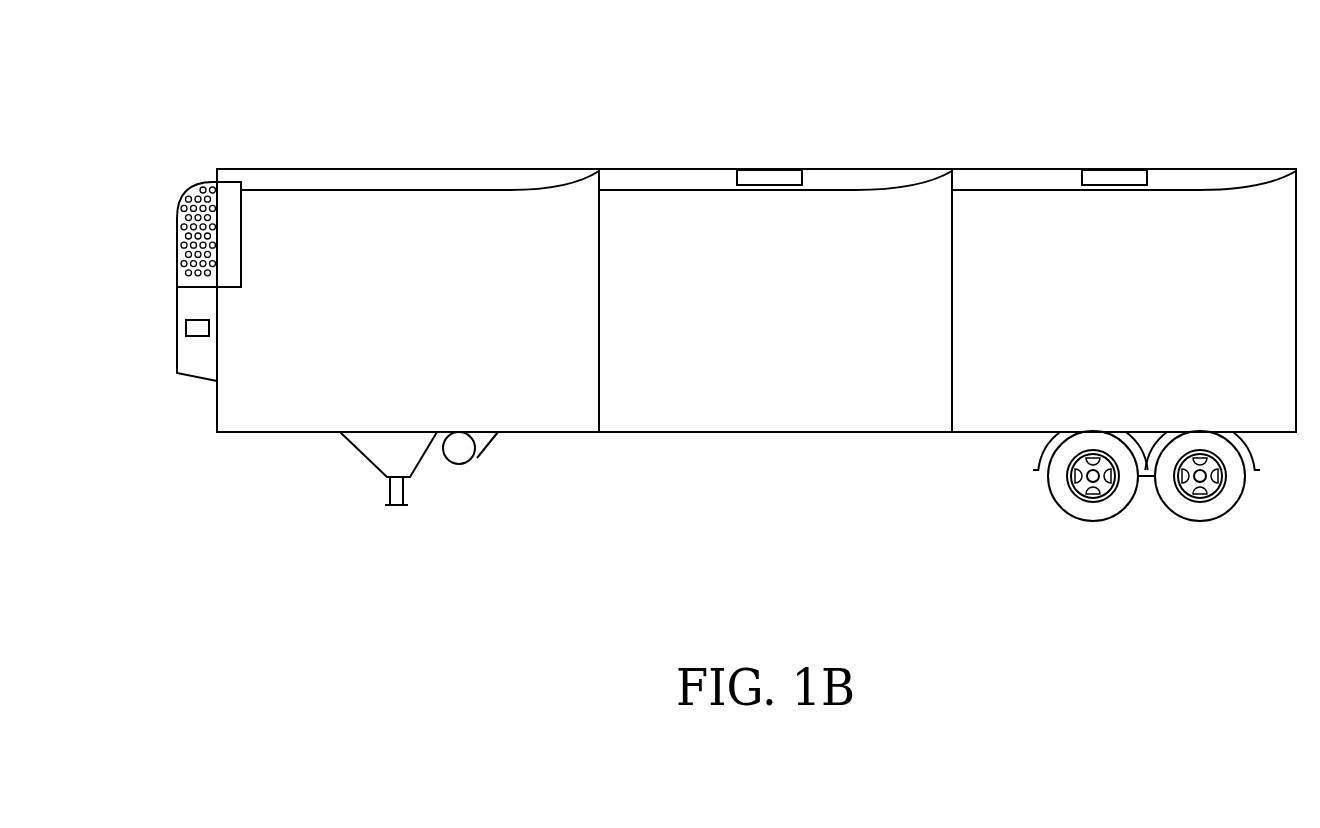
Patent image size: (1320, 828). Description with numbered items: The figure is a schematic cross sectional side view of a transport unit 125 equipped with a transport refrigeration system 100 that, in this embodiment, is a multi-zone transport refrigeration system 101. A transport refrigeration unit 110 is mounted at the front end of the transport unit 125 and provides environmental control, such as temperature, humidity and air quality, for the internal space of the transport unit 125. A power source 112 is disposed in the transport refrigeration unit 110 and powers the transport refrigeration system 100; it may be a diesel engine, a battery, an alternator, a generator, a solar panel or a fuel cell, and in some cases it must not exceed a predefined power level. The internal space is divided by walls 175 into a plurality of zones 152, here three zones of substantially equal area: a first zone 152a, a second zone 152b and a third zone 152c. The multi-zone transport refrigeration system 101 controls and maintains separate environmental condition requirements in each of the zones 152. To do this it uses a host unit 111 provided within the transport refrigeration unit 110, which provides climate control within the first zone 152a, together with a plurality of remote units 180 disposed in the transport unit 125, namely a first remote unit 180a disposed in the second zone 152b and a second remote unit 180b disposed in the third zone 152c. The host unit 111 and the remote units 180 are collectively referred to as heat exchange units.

The transport refrigeration system 100 is at (487, 87).
The multi-zone transport refrigeration system 101 is at (602, 153).
The transport refrigeration unit 110 is at (177, 349).
The host unit 111 is at (170, 192).
The power source 112 is at (197, 336).
The transport unit 125 is at (1250, 169).
The zones 152 is at (653, 485).
The first zone 152a is at (302, 383).
The second zone 152b is at (732, 383).
The third zone 152c is at (1007, 450).
The walls 175 is at (599, 382).
The remote units 180 is at (942, 122).
The first remote unit 180a is at (770, 178).
The second remote unit 180b is at (1114, 155).